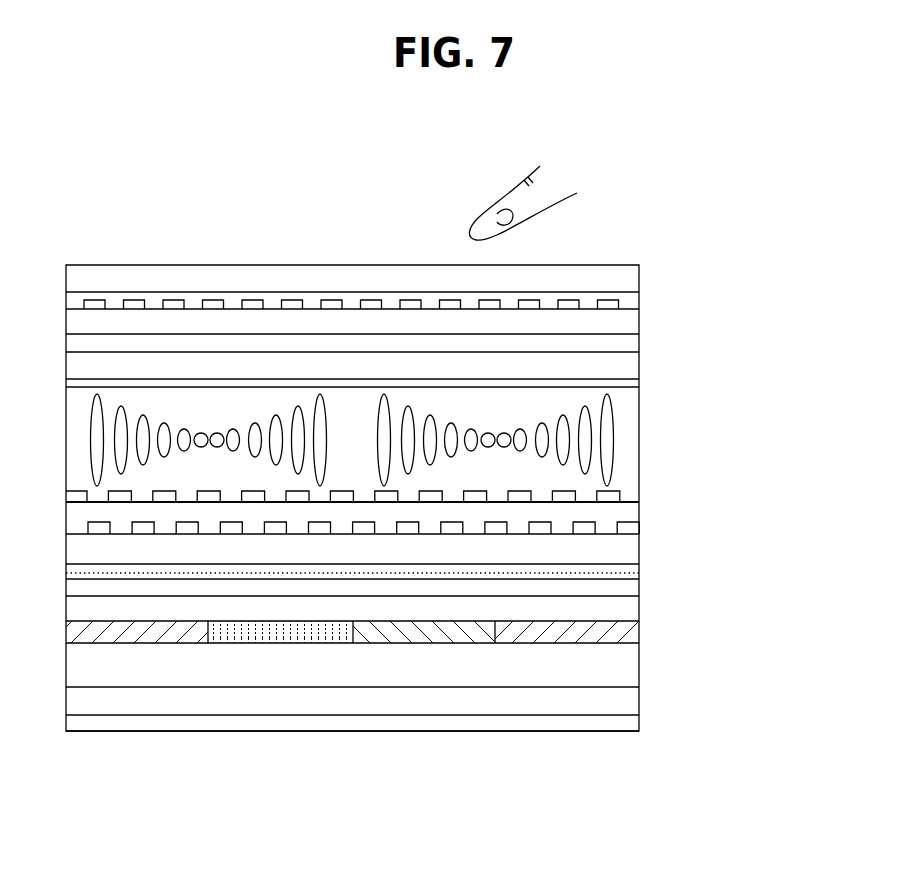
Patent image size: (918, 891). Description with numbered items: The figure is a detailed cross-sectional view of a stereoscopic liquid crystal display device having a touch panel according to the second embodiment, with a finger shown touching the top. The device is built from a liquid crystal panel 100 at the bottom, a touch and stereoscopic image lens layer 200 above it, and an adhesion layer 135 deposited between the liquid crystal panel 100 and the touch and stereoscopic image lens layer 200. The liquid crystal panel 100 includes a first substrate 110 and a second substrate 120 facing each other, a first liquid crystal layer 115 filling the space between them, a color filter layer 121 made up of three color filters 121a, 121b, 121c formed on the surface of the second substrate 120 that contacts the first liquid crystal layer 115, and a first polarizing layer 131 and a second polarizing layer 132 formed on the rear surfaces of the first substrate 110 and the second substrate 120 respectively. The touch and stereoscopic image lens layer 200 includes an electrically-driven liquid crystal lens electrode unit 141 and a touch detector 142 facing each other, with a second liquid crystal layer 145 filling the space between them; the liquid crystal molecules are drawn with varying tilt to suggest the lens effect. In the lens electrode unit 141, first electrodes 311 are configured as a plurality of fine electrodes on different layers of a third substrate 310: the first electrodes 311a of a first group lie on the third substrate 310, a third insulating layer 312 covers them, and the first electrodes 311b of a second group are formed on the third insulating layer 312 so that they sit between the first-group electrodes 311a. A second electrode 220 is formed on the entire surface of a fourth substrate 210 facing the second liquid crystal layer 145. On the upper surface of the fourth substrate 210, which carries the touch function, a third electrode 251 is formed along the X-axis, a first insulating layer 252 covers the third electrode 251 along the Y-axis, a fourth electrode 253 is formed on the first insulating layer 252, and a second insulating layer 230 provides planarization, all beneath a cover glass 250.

The liquid crystal panel 100 is at (708, 590).
The first substrate 110 is at (385, 704).
The first liquid crystal layer 115 is at (385, 672).
The second substrate 120 is at (385, 720).
The color filter layer 121 is at (280, 728).
The color filter 121a is at (140, 632).
The color filter 121b is at (280, 632).
The color filter 121c is at (424, 698).
The first polarizing layer 131 is at (385, 724).
The second polarizing layer 132 is at (385, 591).
The adhesion layer 135 is at (385, 572).
The electrically-driven liquid crystal lens electrode unit 141 is at (442, 504).
The touch detector 142 is at (415, 309).
The second liquid crystal layer 145 is at (398, 440).
The touch and stereoscopic image lens layer 200 is at (820, 348).
The fourth substrate 210 is at (385, 368).
The second electrode 220 is at (385, 386).
The second insulating layer 230 is at (385, 267).
The cover glass 250 is at (385, 281).
The third electrode 251 is at (385, 342).
The first insulating layer 252 is at (385, 323).
The fourth electrode 253 is at (606, 298).
The third substrate 310 is at (385, 553).
The first electrodes 311 is at (412, 485).
The first electrodes of a first group 311a is at (632, 512).
The first electrodes of a second group 311b is at (613, 490).
The third insulating layer 312 is at (617, 536).